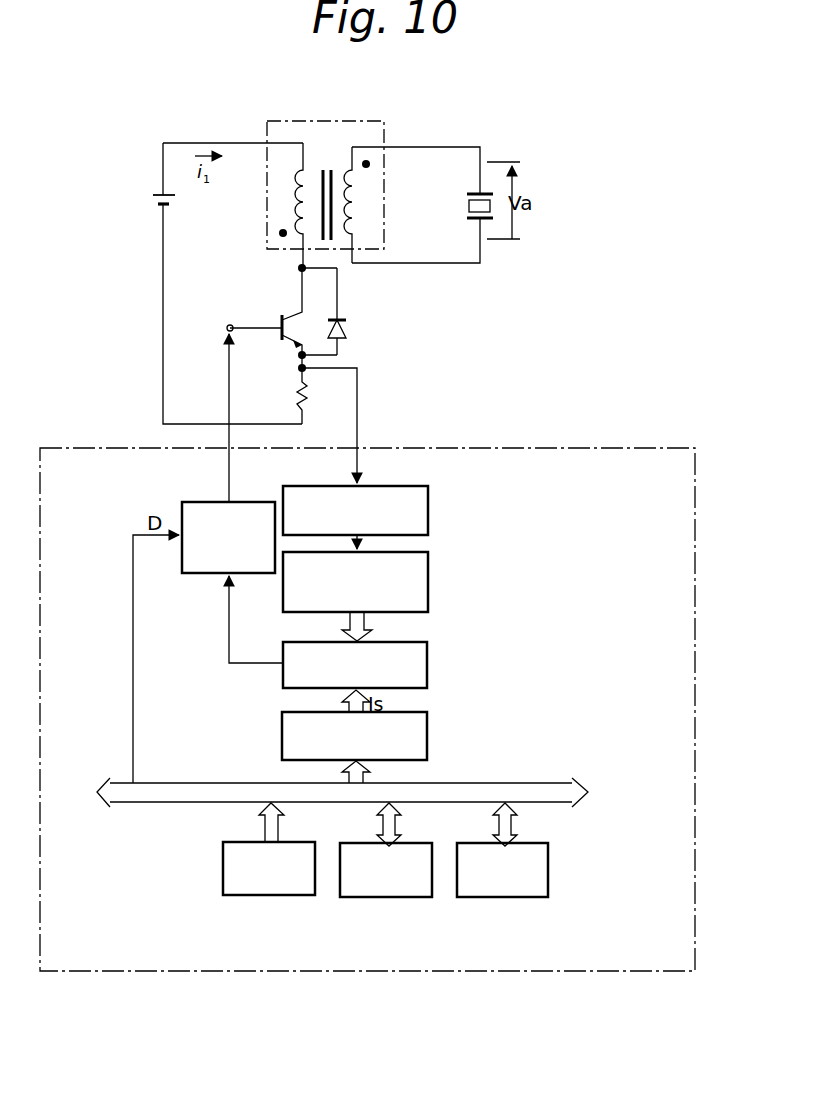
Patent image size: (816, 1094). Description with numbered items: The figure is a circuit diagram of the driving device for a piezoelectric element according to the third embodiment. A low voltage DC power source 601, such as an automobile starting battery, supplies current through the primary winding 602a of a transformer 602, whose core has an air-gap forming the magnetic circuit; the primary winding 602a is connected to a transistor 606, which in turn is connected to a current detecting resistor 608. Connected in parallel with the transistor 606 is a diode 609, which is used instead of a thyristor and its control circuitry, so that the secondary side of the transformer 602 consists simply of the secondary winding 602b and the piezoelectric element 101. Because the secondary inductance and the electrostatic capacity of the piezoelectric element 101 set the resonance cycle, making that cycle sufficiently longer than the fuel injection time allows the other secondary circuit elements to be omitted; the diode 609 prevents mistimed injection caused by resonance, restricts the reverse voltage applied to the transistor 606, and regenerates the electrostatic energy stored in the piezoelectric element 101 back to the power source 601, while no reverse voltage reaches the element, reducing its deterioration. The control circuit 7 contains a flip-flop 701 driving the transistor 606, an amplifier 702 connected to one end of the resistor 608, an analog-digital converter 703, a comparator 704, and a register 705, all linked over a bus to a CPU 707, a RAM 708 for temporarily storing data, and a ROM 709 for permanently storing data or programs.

The control circuit 7 is at (567, 452).
The piezoelectric element 101 is at (468, 187).
The low voltage DC power source 601 is at (173, 200).
The transformer 602 is at (325, 168).
The primary winding 602a is at (293, 180).
The secondary winding 602b is at (357, 182).
The transistor 606 is at (275, 320).
The current detecting resistor 608 is at (312, 390).
The diode 609 is at (352, 328).
The flip-flop 701 is at (193, 575).
The amplifier 702 is at (432, 507).
The analog-digital converter 703 is at (432, 582).
The comparator 704 is at (430, 658).
The register 705 is at (431, 733).
The CPU 707 is at (501, 897).
The RAM 708 is at (386, 897).
The ROM 709 is at (272, 895).